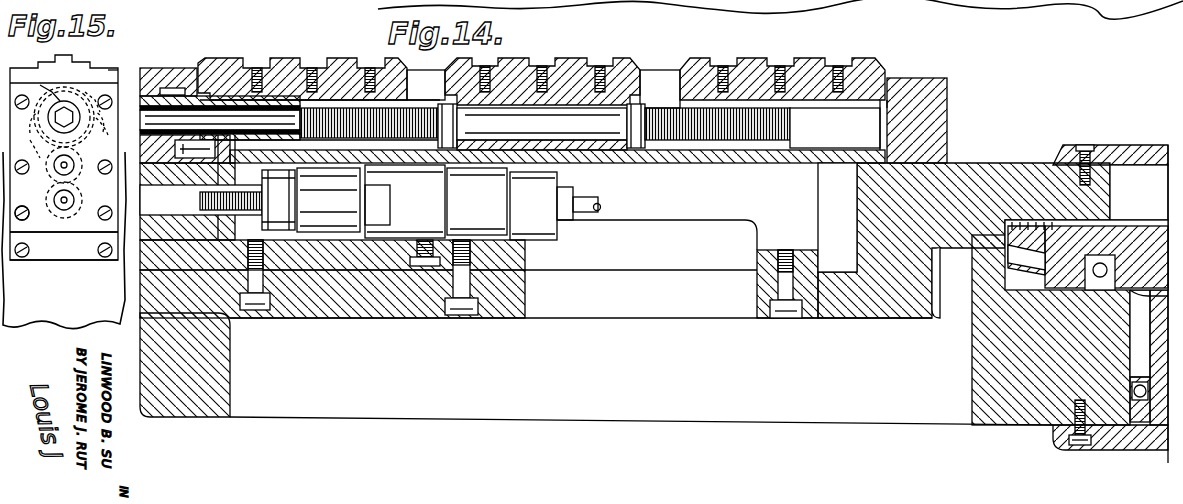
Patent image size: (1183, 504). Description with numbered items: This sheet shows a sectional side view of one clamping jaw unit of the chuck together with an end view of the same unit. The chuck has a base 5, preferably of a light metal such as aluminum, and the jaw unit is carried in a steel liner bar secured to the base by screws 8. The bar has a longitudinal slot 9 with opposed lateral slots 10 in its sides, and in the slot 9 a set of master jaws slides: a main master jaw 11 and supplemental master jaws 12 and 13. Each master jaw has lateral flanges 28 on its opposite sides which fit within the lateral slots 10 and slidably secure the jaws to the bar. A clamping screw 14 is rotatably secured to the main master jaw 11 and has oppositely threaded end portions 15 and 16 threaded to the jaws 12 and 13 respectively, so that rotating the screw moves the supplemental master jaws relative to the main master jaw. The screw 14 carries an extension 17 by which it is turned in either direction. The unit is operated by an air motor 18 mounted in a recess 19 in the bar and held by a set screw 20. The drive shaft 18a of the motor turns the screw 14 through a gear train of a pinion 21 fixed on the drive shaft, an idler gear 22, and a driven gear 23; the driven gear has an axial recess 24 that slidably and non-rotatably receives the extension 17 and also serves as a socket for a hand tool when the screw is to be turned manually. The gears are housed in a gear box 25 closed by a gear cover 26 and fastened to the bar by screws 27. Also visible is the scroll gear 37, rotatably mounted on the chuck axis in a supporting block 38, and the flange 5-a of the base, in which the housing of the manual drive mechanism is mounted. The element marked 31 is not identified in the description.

In FIG. 15, the base 5 is at (38, 318).
In FIG. 14, the base 5 is at (984, 166).
In FIG. 14, the flange 5-a is at (230, 368).
In FIG. 14, the screws 8 is at (258, 306).
In FIG. 15, the longitudinal slot 9 is at (90, 108).
In FIG. 14, the longitudinal slot 9 is at (658, 86).
In FIG. 15, the lateral slots 10 is at (64, 130).
In FIG. 14, the lateral slots 10 is at (882, 122).
In FIG. 14, the main master jaw 11 is at (575, 72).
In FIG. 15, the supplemental master jaw 12 is at (80, 64).
In FIG. 14, the supplemental master jaw 12 is at (337, 72).
In FIG. 14, the supplemental master jaw 13 is at (748, 72).
In FIG. 14, the clamping screw 14 is at (570, 131).
In FIG. 14, the threaded end portion 15 is at (435, 122).
In FIG. 14, the threaded end portion 16 is at (643, 118).
In FIG. 14, the extension 17 is at (282, 115).
In FIG. 14, the air motor 18 is at (430, 211).
In FIG. 14, the drive shaft 18a is at (250, 198).
In FIG. 14, the recess 19 is at (340, 242).
In FIG. 14, the set screw 20 is at (423, 267).
In FIG. 15, the pinion 21 is at (58, 218).
In FIG. 15, the idler gear 22 is at (46, 172).
In FIG. 15, the driven gear 23 is at (48, 92).
In FIG. 14, the driven gear 23 is at (167, 88).
In FIG. 14, the axial recess 24 is at (190, 118).
In FIG. 15, the gear box 25 is at (110, 72).
In FIG. 14, the gear box 25 is at (148, 68).
In FIG. 15, the gear cover 26 is at (84, 228).
In FIG. 15, the screws 27 is at (22, 220).
In FIG. 15, the lateral flanges 28 is at (108, 118).
In FIG. 14, the lateral flanges 28 is at (145, 110).
In FIG. 14, the end block 31 is at (946, 92).
In FIG. 14, the scroll gear 37 is at (1128, 236).
In FIG. 14, the supporting block 38 is at (972, 380).